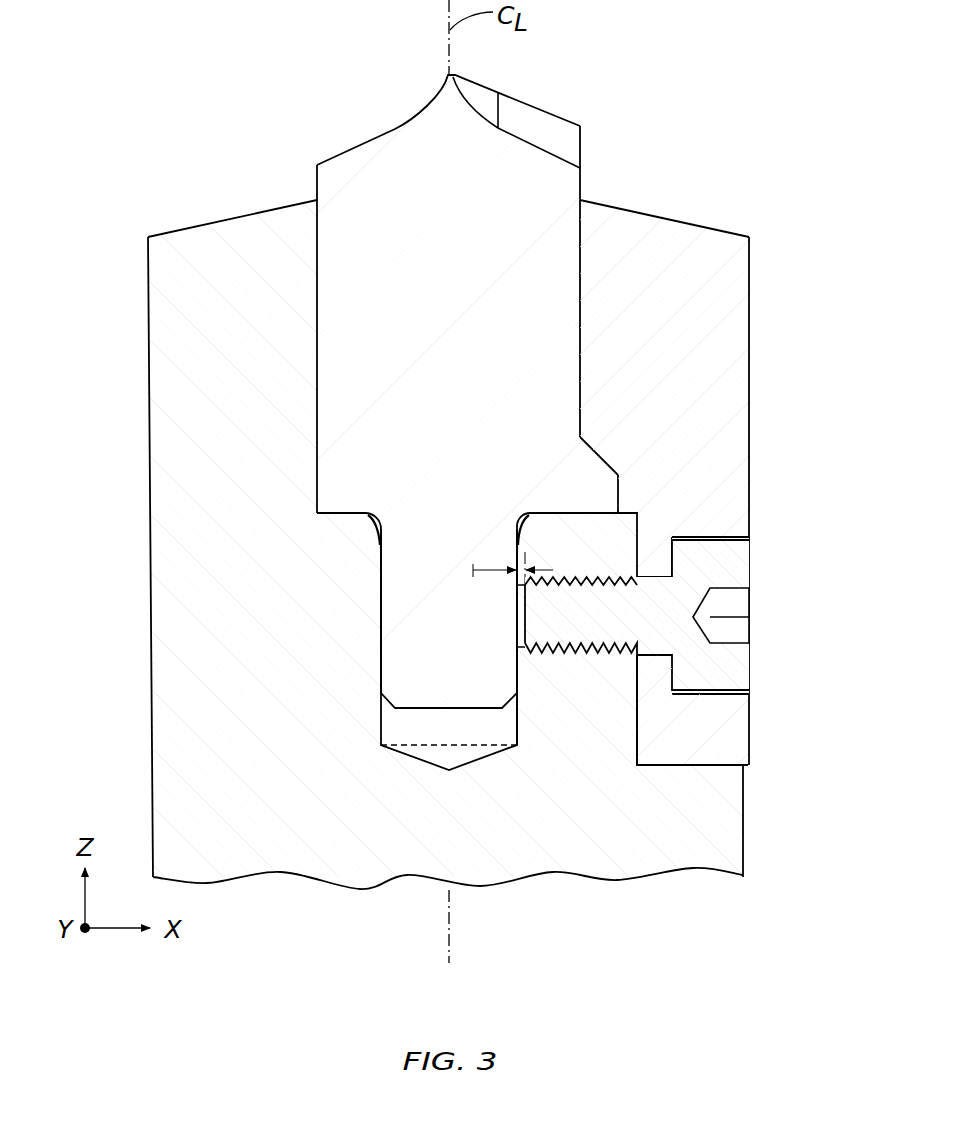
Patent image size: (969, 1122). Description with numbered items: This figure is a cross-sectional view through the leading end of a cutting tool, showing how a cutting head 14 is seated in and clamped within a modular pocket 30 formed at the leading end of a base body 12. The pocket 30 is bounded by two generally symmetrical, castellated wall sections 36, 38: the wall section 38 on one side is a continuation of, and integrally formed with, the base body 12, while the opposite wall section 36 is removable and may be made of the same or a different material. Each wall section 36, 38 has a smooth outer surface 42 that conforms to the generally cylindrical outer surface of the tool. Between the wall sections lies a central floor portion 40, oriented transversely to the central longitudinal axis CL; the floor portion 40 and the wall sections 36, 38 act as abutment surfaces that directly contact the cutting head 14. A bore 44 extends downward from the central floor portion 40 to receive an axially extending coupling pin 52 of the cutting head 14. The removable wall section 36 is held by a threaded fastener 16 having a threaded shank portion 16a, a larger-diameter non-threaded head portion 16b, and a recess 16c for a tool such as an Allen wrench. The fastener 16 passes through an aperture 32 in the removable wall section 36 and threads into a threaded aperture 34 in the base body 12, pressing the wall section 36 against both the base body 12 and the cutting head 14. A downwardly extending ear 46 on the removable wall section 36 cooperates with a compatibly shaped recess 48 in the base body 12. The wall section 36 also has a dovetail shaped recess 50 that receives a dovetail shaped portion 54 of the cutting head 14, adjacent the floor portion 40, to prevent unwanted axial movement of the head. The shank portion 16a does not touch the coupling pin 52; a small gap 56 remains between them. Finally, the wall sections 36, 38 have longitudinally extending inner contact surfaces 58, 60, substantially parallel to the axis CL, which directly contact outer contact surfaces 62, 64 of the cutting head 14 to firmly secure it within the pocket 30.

The base body 12 is at (128, 729).
The cutting head 14 is at (347, 95).
The threaded fastener 16 is at (768, 618).
The threaded shank portion 16a is at (600, 622).
The non-threaded head portion 16b is at (726, 668).
The recess 16c is at (733, 588).
The modular pocket 30 is at (300, 142).
The aperture 32 is at (731, 537).
The threaded aperture 34 is at (608, 592).
The removable wall section 36 is at (770, 344).
The wall section 38 is at (128, 324).
The central floor portion 40 is at (555, 513).
The smooth outer surface 42 is at (749, 282).
The bore 44 is at (381, 605).
The downwardly extending ear 46 is at (724, 724).
The recess 48 is at (716, 765).
The dovetail shaped recess 50 is at (624, 487).
The coupling pin 52 is at (437, 668).
The dovetail shaped portion 54 is at (587, 497).
The small gap 56 is at (506, 581).
The inner contact surface 58 is at (580, 257).
The inner contact surface 60 is at (318, 258).
The outer contact surface 62 is at (605, 272).
The outer contact surface 64 is at (317, 361).